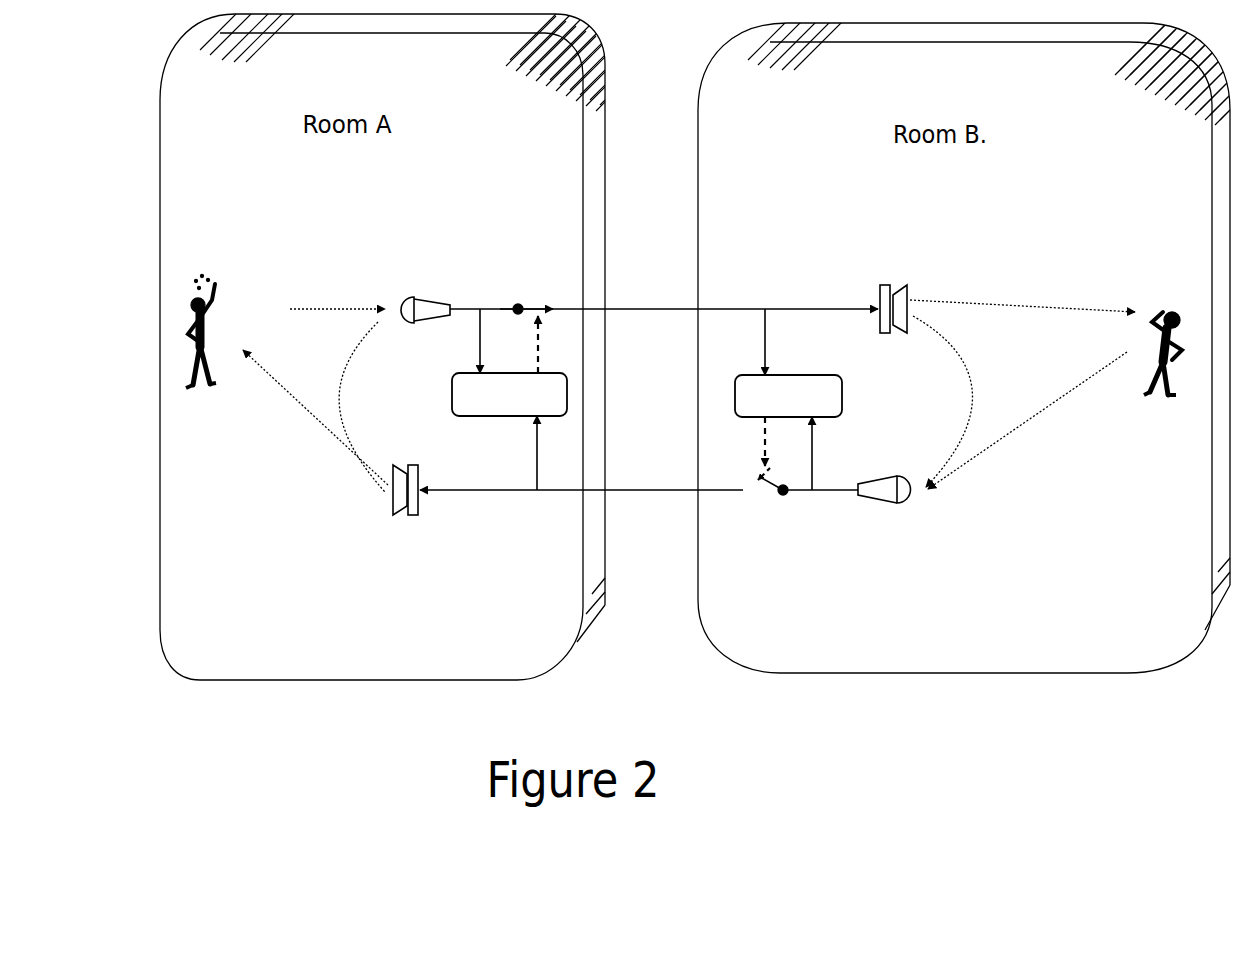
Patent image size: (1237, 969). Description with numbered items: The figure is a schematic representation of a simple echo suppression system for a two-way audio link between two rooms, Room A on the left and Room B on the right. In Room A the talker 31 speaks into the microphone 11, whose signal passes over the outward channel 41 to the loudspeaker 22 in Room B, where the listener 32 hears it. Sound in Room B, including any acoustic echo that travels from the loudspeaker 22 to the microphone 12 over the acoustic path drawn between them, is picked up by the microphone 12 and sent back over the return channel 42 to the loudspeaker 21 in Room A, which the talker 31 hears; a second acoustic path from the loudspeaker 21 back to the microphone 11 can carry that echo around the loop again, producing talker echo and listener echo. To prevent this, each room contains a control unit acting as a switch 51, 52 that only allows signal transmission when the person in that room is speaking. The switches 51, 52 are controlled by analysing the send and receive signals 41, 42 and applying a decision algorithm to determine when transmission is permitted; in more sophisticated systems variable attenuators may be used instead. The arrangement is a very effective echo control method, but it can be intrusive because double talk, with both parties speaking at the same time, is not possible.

The microphone 11 is at (370, 283).
The microphone 12 is at (992, 426).
The loudspeaker 21 is at (332, 449).
The loudspeaker 22 is at (1007, 293).
The talker 31 is at (200, 309).
The listener 32 is at (1168, 314).
The outward channel 41 is at (664, 285).
The return channel 42 is at (639, 514).
The switch 51 is at (481, 399).
The switch 52 is at (803, 399).